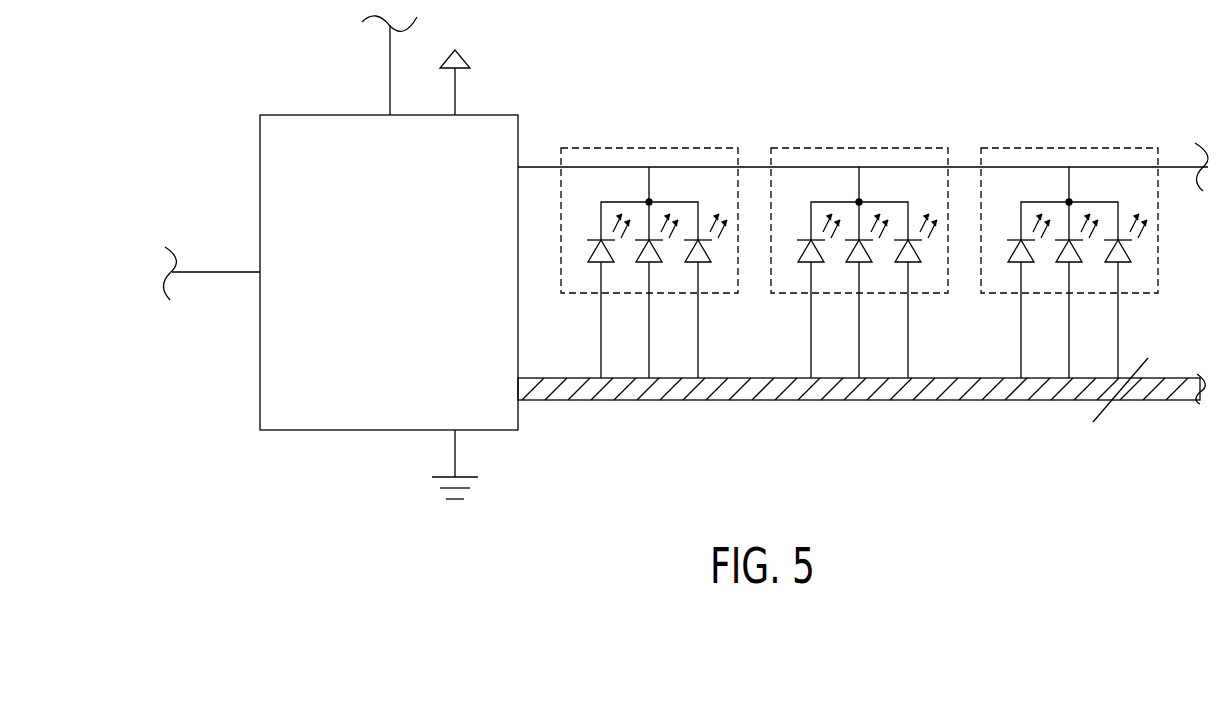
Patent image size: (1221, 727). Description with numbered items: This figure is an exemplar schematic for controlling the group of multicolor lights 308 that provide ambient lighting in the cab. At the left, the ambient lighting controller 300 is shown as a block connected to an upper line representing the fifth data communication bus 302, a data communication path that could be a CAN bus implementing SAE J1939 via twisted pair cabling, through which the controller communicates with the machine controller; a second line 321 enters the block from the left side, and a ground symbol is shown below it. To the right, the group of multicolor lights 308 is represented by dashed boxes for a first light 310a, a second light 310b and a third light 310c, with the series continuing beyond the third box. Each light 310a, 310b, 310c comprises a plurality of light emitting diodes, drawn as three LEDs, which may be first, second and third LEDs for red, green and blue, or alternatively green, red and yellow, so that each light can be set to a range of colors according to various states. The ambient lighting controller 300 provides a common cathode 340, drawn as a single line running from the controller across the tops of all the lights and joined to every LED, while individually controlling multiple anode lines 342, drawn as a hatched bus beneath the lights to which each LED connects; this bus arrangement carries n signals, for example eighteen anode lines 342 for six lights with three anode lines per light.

The ambient lighting controller 300 is at (400, 288).
The fifth data communication bus 302 is at (390, 66).
The group of multicolor lights 308 is at (962, 45).
The first light 310a is at (675, 135).
The second light 310b is at (885, 135).
The third light 310c is at (1095, 135).
The control input line 321 is at (239, 272).
The common cathode 340 is at (540, 165).
The anode lines 342 is at (578, 402).